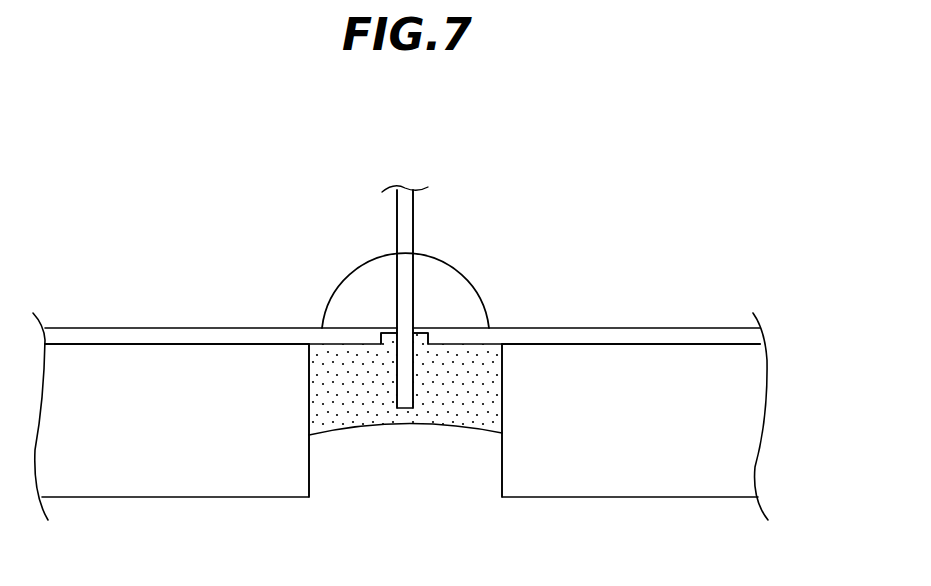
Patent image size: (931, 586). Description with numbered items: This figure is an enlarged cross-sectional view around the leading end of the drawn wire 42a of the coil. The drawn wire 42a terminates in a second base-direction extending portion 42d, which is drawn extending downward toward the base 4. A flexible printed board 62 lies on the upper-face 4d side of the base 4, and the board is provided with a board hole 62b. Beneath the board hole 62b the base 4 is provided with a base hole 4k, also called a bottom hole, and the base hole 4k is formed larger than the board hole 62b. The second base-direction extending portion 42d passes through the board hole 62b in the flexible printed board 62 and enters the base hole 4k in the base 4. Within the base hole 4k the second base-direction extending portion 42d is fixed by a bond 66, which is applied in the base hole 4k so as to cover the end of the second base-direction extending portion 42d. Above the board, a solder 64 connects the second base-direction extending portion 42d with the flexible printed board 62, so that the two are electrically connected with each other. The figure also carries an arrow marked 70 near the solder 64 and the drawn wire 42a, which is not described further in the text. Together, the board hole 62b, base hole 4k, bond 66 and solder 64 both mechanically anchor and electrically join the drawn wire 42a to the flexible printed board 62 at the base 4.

The base 4 is at (153, 478).
The upper face 4d is at (138, 343).
The base hole 4k is at (310, 462).
The flexible printed board 62 is at (212, 338).
The board hole 62b is at (392, 336).
The solder 64 is at (470, 313).
The bond 66 is at (457, 408).
The pressing direction 70 is at (425, 320).
The drawn wire 42a is at (405, 212).
The second base-direction extending portion 42d is at (405, 235).